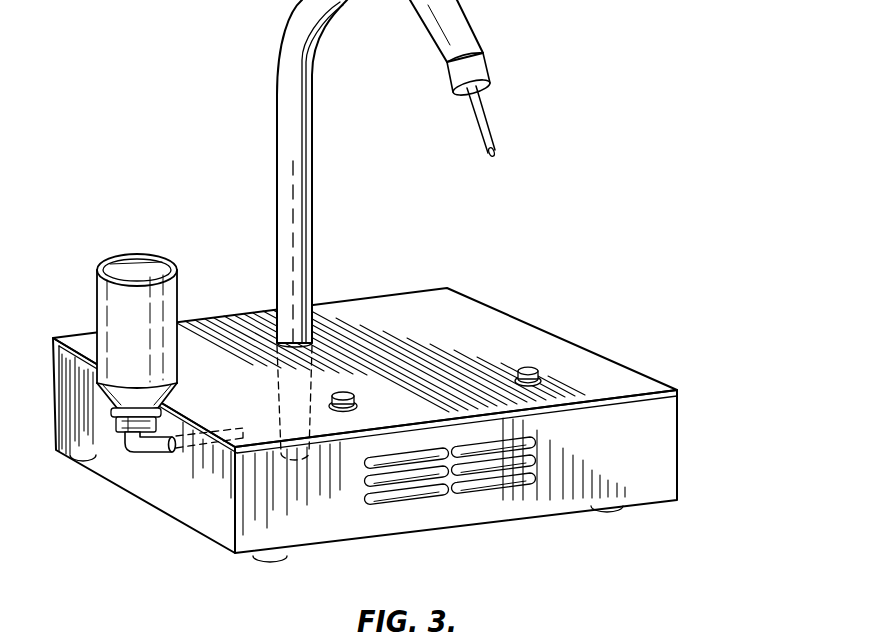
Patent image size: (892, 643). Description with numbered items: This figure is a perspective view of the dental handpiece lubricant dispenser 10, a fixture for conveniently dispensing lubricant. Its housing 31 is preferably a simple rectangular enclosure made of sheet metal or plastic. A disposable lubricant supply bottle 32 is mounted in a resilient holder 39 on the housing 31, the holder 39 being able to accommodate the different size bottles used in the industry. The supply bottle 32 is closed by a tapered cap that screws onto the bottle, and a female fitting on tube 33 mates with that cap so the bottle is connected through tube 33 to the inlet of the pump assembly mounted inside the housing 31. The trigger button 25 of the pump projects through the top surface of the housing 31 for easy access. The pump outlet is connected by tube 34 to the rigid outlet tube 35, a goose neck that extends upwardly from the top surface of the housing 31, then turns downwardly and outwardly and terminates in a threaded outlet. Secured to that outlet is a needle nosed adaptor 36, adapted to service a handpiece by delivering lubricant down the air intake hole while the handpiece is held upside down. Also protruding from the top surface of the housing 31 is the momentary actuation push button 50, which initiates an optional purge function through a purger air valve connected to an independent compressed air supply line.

The dispensing apparatus 10 is at (556, 244).
The trigger button 25 is at (528, 370).
The housing 31 is at (679, 429).
The disposable lubricant supply bottle 32 is at (97, 300).
The tube 33 is at (131, 455).
The tube 34 is at (278, 389).
The rigid outlet tube 35 is at (275, 160).
The needle nosed adaptor 36 is at (490, 118).
The resilient holder 39 is at (112, 413).
The momentary actuation push button 50 is at (343, 392).